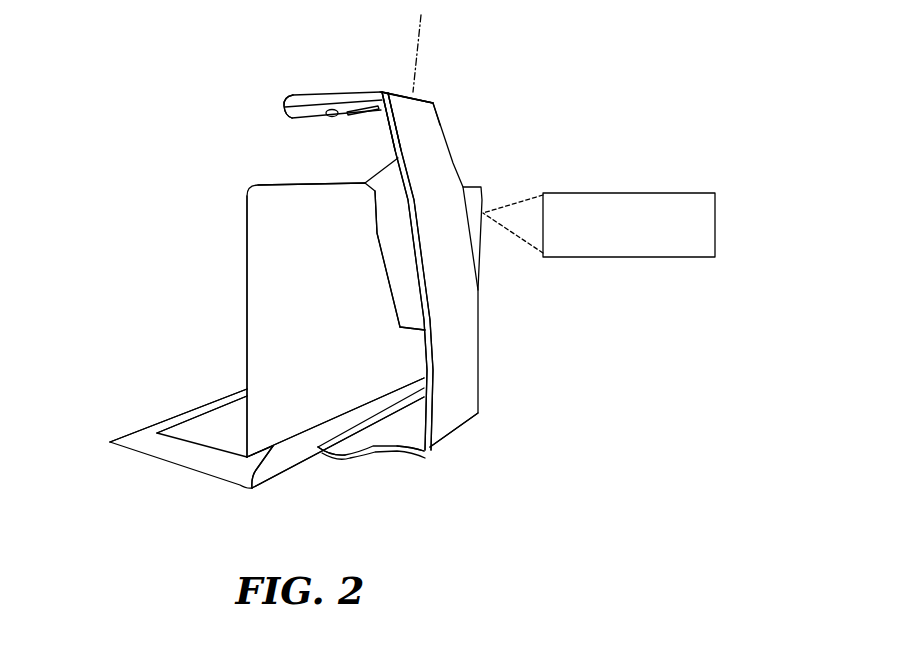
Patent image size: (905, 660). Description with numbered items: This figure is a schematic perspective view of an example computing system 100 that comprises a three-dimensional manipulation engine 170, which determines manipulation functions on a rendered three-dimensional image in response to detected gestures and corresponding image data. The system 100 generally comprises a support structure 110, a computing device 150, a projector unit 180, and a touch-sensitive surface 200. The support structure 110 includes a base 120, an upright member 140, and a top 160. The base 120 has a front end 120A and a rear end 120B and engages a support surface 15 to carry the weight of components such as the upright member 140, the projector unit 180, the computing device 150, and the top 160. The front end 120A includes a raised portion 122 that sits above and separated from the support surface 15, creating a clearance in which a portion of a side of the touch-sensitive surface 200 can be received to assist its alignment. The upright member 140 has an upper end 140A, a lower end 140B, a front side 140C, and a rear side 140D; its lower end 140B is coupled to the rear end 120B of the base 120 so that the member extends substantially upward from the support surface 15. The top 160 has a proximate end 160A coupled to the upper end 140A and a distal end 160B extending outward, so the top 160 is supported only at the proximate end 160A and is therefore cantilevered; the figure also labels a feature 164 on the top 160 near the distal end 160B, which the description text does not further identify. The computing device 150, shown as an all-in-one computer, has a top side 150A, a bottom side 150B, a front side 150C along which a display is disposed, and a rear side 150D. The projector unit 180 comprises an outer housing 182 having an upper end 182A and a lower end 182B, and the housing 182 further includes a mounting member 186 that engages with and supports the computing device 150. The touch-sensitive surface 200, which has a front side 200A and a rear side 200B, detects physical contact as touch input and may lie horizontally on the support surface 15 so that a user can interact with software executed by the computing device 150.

The support surface 15 is at (90, 488).
The computing system 100 is at (118, 189).
The support structure 110 is at (523, 185).
The base 120 is at (374, 461).
The front end 120A is at (365, 417).
The rear end 120B is at (428, 461).
The raised portion 122 is at (336, 457).
The upright member 140 is at (460, 368).
The upper end 140A is at (439, 98).
The lower end 140B is at (456, 440).
The front side 140C is at (387, 138).
The rear side 140D is at (452, 160).
The computing device 150 is at (243, 197).
The top side 150A is at (306, 182).
The bottom side 150B is at (243, 480).
The front side 150C is at (245, 296).
The rear side 150D is at (327, 267).
The top 160 is at (365, 81).
The proximate end 160A is at (465, 82).
The distal end 160B is at (283, 109).
The aperture in handle 164 is at (309, 122).
The 3D manipulation engine 170 is at (620, 258).
The projector unit 180 is at (427, 262).
The outer housing 182 is at (413, 294).
The upper end 182A is at (408, 150).
The lower end 182B is at (407, 335).
The mounting member 186 is at (375, 206).
The touch-sensitive surface 200 is at (140, 432).
The front side 200A is at (176, 424).
The rear side 200B is at (277, 490).